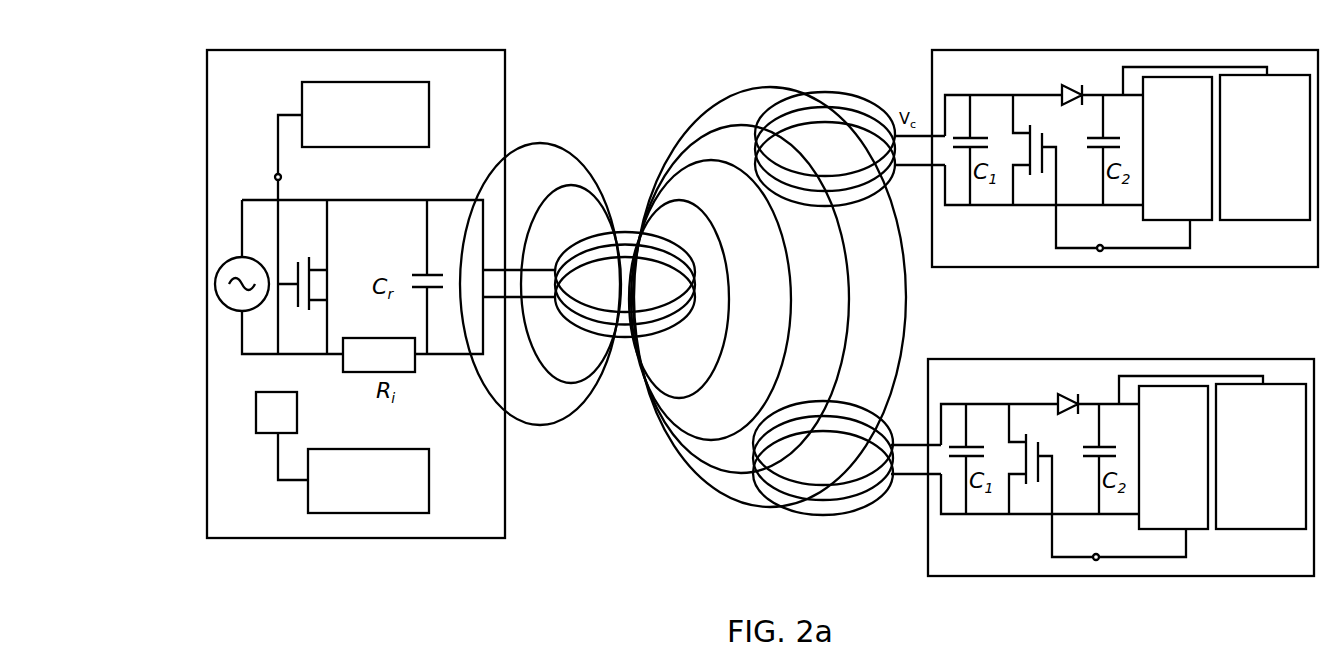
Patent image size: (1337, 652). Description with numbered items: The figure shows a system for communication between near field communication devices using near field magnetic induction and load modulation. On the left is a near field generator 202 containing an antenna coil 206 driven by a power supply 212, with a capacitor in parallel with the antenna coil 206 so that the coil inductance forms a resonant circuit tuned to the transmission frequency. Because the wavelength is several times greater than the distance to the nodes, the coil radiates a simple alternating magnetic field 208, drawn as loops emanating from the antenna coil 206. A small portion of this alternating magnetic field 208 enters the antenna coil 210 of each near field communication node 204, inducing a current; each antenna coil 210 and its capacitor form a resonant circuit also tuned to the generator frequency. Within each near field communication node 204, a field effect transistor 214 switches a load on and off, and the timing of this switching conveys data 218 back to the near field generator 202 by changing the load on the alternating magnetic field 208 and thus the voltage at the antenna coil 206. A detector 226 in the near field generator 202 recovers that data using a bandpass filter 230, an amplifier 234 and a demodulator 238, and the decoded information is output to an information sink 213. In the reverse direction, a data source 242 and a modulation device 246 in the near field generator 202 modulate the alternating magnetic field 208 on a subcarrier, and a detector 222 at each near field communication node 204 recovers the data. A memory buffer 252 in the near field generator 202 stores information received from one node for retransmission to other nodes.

The near field generator 202 is at (207, 101).
The data source 242 is at (429, 86).
The modulation device 246 is at (297, 267).
The power supply 212 is at (215, 288).
The memory buffer 252 is at (256, 421).
The detector 226 is at (429, 470).
The antenna coil 206 is at (617, 231).
The alternating magnetic field 208 is at (712, 492).
The antenna coil 210 is at (818, 91).
The near field communication node 204 is at (938, 50).
The field effect transistor 214 is at (1024, 125).
The data 218 is at (1165, 77).
The detector 222 is at (1280, 75).
The bandpass filter 230 is at (313, 651).
The amplifier 234 is at (494, 651).
The demodulator 238 is at (560, 651).
The information sink 213 is at (660, 651).